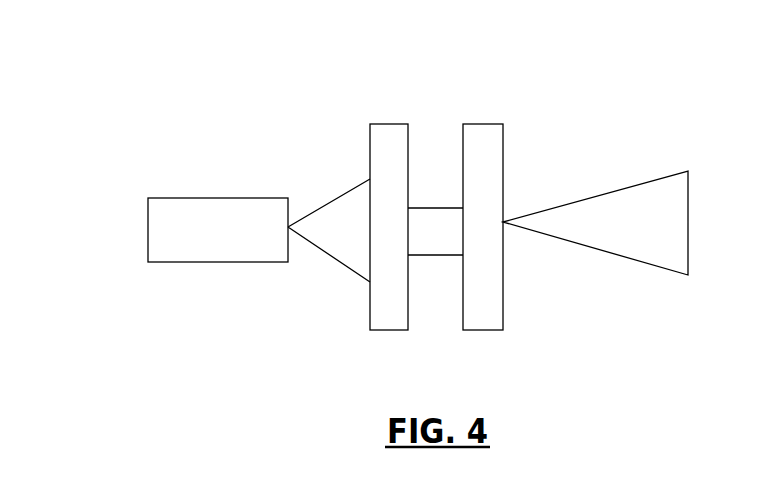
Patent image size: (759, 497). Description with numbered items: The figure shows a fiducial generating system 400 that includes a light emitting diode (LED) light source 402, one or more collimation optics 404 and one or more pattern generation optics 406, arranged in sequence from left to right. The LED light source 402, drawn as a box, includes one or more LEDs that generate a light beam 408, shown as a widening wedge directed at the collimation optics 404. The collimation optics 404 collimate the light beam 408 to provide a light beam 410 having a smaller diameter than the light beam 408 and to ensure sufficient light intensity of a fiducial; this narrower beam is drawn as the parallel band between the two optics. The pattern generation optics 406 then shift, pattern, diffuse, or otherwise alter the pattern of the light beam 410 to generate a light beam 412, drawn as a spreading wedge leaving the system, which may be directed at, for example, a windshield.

The fiducial generating system 400 is at (174, 62).
The light emitting diode (LED) light source 402 is at (190, 197).
The collimation optics 404 is at (388, 124).
The pattern generation optics 406 is at (482, 124).
The light beam 408 is at (334, 194).
The light beam 410 is at (428, 258).
The light beam 412 is at (637, 184).